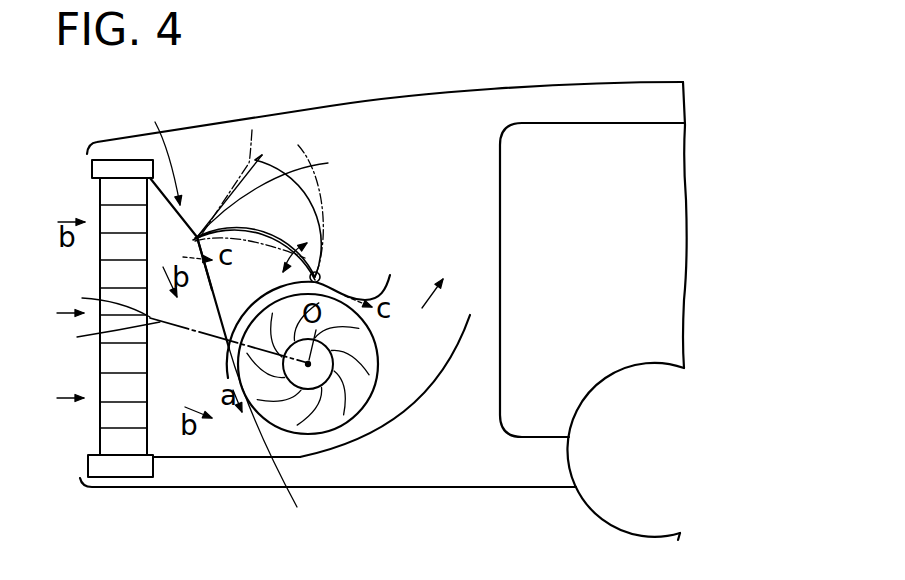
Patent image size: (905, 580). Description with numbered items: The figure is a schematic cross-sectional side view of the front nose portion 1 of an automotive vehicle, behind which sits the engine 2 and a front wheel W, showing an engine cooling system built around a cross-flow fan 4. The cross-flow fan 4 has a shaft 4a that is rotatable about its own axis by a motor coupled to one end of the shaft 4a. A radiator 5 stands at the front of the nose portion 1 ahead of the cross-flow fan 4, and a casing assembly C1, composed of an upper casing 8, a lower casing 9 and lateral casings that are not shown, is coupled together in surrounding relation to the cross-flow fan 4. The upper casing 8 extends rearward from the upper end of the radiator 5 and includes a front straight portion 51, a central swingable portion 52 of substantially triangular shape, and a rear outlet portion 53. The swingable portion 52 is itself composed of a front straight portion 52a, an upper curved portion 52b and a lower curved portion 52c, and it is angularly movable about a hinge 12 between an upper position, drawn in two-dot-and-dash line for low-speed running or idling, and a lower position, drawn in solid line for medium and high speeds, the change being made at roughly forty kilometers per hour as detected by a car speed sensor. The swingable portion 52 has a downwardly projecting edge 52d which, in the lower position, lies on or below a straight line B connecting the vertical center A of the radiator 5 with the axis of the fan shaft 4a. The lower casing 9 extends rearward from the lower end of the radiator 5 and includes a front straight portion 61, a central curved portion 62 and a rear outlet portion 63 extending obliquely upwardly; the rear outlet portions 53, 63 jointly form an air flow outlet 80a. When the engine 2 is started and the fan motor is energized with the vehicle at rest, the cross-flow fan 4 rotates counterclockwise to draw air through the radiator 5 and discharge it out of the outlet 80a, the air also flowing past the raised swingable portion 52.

The front nose portion 1 is at (213, 122).
The engine 2 is at (577, 138).
The cross-flow fan 4 is at (350, 407).
The shaft 4a is at (327, 370).
The radiator 5 is at (112, 192).
The upper casing 8 is at (184, 220).
The lower casing 9 is at (212, 462).
The hinge 12 is at (320, 274).
The front straight portion 51 is at (190, 234).
The central swingable portion 52 is at (219, 312).
The front straight portion 52a is at (252, 130).
The upper curved portion 52b is at (275, 157).
The lower curved portion 52c is at (268, 232).
The downwardly projecting edge 52d is at (288, 445).
The rear outlet portion 53 is at (386, 280).
The front straight portion 61 is at (258, 463).
The central curved portion 62 is at (357, 447).
The rear outlet portion 63 is at (470, 317).
The air flow outlet 80a is at (452, 312).
The front wheel W is at (633, 366).
The vertical center of the radiator A is at (102, 297).
The straight line B is at (181, 340).
The casing assembly C1 is at (160, 148).